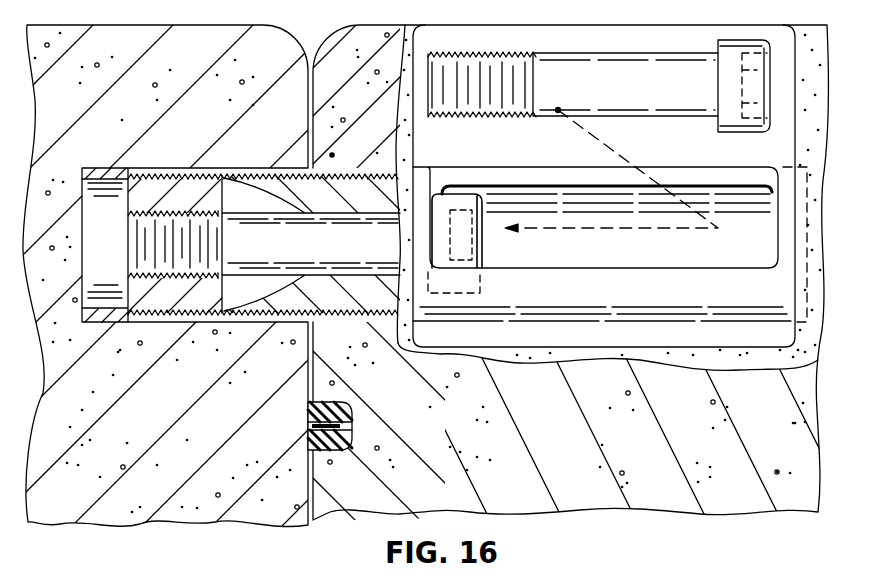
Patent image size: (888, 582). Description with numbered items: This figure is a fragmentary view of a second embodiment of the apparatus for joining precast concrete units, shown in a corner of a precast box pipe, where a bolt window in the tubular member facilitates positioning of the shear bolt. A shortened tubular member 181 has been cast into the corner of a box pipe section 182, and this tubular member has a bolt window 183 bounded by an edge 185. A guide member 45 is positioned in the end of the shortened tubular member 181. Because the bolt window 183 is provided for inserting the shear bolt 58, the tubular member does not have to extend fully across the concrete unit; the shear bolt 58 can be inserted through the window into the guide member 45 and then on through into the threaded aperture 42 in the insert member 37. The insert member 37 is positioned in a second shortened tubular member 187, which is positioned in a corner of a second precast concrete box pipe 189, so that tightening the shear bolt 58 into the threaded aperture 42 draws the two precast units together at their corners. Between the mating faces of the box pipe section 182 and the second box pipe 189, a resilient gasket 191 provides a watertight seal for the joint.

The insert member 37 is at (182, 186).
The threaded aperture 42 is at (137, 256).
The guide member 45 is at (362, 177).
The shear bolt 58 is at (676, 96).
The shortened tubular member 181 is at (755, 313).
The box pipe section 182 is at (582, 429).
The bolt window 183 is at (558, 198).
The edge 185 is at (730, 184).
The shortened tubular member 187 is at (107, 168).
The second precast concrete box pipe 189 is at (229, 425).
The resilient gasket 191 is at (353, 417).